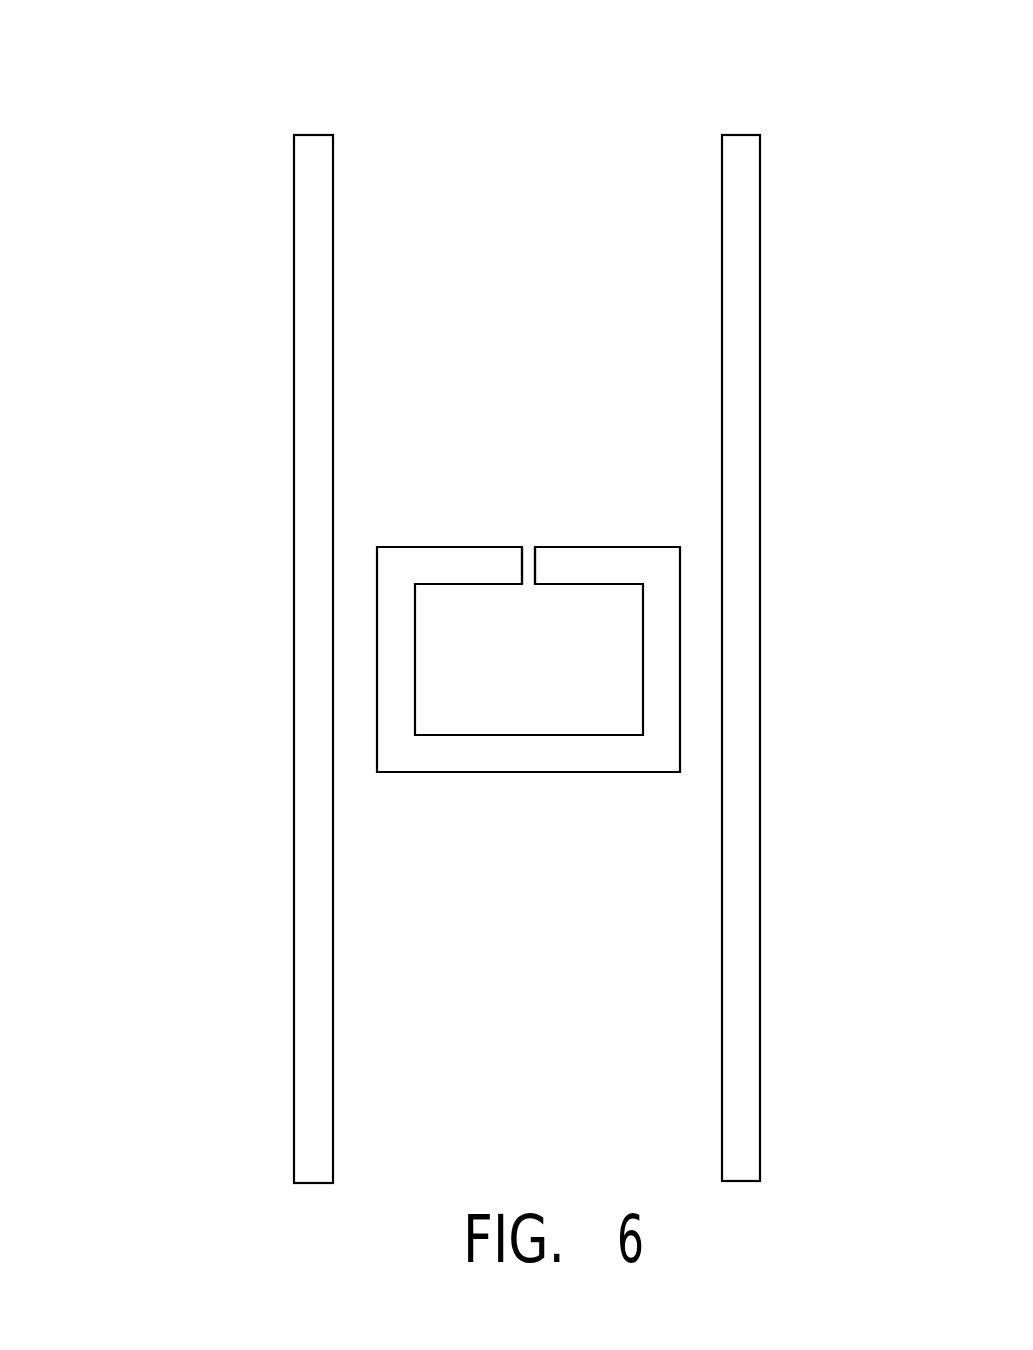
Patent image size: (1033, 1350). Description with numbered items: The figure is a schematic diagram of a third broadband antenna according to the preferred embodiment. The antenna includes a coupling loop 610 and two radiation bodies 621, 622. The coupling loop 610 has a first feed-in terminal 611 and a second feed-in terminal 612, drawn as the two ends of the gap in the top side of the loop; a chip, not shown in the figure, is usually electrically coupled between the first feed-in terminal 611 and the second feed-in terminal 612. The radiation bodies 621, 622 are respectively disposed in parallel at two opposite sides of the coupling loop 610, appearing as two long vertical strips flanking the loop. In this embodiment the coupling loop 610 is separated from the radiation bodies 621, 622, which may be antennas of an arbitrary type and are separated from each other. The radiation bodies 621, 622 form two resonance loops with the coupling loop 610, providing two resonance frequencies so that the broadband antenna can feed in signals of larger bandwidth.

The coupling loop 610 is at (535, 773).
The first feed-in terminal 611 is at (520, 566).
The second feed-in terminal 612 is at (537, 566).
The radiation body 621 is at (312, 133).
The radiation body 622 is at (742, 133).